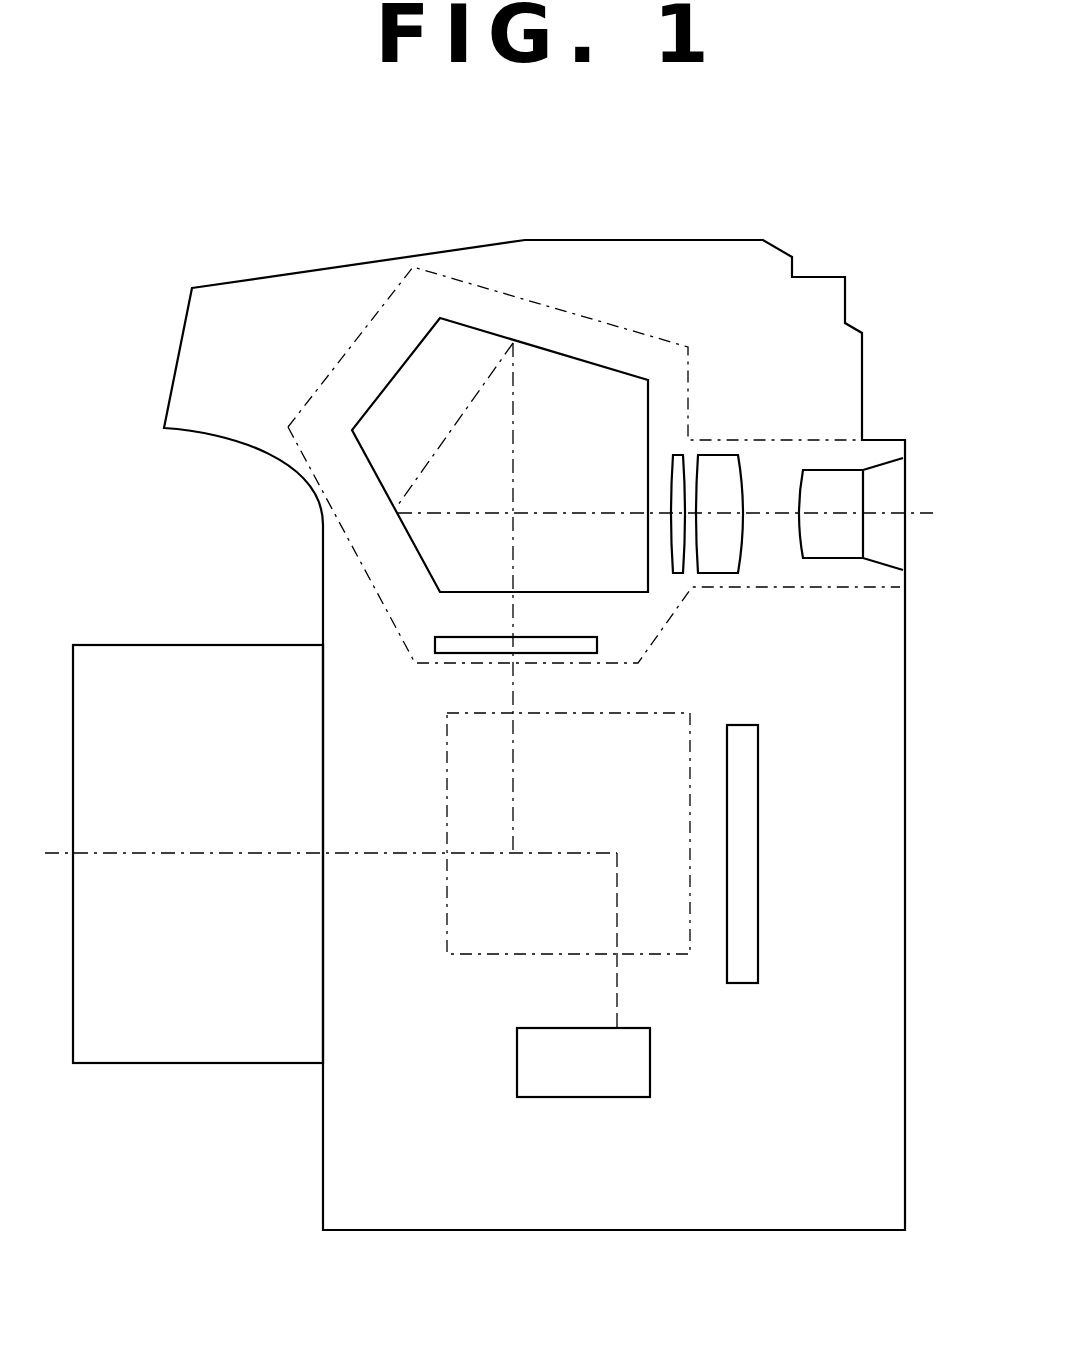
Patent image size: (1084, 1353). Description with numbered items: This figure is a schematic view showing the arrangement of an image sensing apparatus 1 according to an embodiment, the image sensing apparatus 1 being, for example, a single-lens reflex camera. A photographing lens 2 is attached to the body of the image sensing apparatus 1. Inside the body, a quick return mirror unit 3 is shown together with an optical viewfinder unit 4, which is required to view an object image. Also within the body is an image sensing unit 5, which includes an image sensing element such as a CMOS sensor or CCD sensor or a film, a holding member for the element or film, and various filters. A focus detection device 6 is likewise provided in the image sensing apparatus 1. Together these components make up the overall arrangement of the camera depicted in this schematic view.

The image sensing apparatus 1 is at (250, 332).
The photographing lens 2 is at (128, 694).
The quick return mirror unit 3 is at (433, 933).
The optical viewfinder unit 4 is at (620, 327).
The image sensing unit 5 is at (745, 868).
The focus detection device 6 is at (602, 1083).